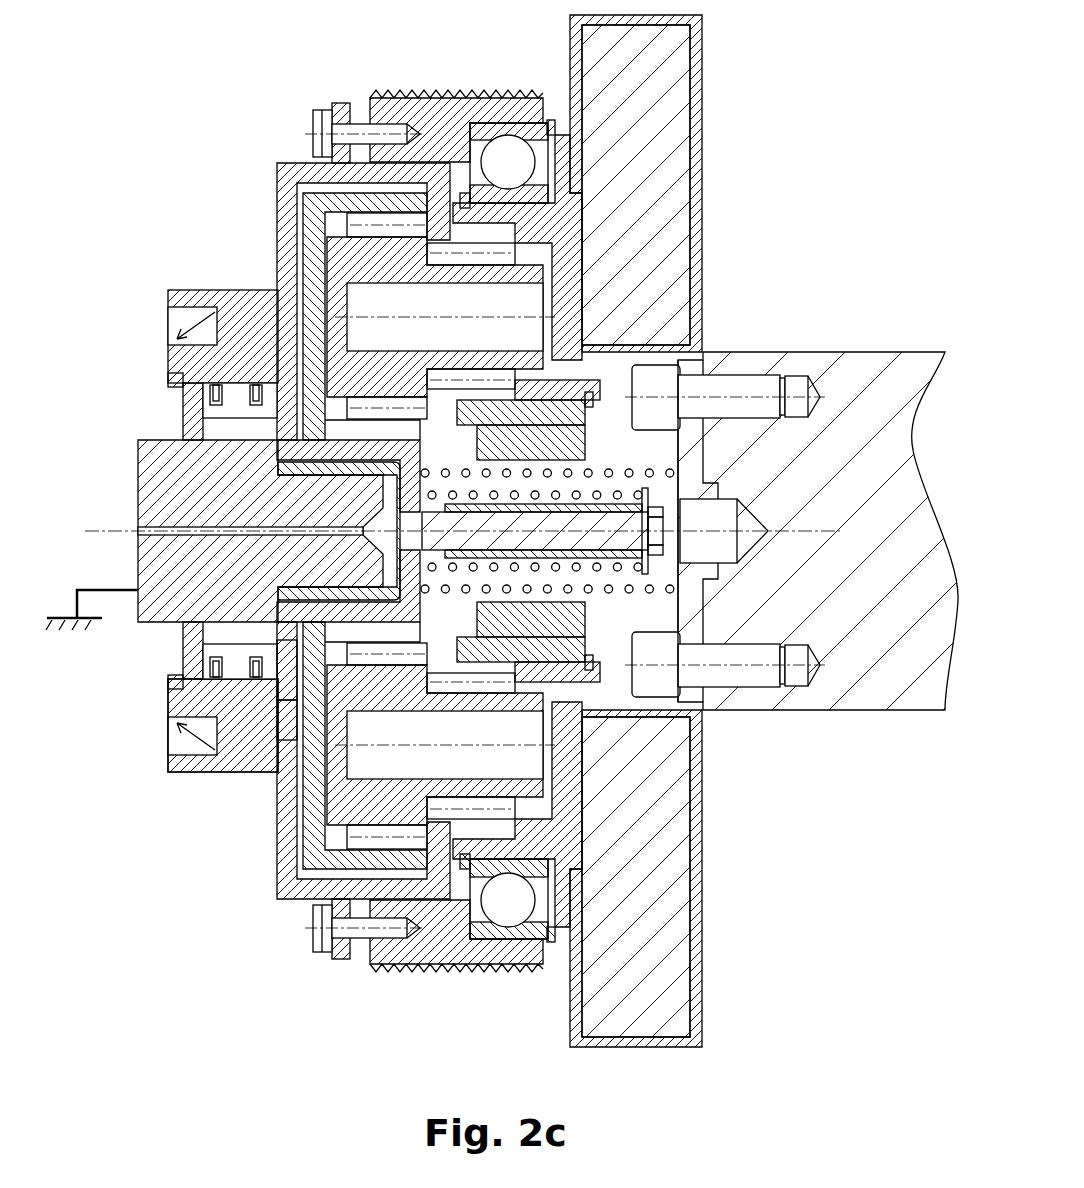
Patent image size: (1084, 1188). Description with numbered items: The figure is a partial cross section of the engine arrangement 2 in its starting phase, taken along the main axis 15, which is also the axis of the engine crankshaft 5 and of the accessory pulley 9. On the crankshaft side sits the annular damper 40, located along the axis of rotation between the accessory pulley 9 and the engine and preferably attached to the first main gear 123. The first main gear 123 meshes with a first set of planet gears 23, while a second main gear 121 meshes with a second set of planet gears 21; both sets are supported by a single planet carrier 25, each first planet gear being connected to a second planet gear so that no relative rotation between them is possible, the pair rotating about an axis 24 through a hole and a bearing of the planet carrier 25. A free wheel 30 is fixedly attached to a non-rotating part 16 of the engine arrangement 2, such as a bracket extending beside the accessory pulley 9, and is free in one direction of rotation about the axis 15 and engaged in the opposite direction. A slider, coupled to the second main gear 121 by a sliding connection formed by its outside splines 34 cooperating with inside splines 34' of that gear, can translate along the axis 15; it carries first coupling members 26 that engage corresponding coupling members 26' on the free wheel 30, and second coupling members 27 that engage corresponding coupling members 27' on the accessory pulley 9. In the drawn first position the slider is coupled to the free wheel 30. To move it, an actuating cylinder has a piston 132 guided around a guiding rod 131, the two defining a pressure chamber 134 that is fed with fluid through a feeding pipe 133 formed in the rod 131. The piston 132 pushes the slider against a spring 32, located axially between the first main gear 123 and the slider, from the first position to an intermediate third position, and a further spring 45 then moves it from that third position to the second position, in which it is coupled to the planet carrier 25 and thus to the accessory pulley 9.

The engine arrangement 2 is at (798, 137).
The crankshaft 5 is at (840, 352).
The accessory pulley 9 is at (427, 90).
The main axis 15 is at (105, 533).
The non-rotating part 16 is at (62, 630).
The second set of planet gears 21 is at (360, 237).
The first set of planet gears 23 is at (440, 260).
The axis 24 is at (378, 310).
The planet carrier 25 is at (437, 828).
The first coupling members 26 is at (324, 668).
The coupling members 26' is at (339, 696).
The second coupling members 27 is at (236, 744).
The coupling members 27' is at (287, 720).
The free wheel 30 is at (237, 398).
The spring 32 is at (632, 470).
The outside splines 34 is at (225, 500).
The inside splines 34' is at (223, 725).
The annular damper 40 is at (650, 85).
The spring 45 is at (618, 572).
The second main gear 121 is at (313, 232).
The first main gear 123 is at (562, 305).
The guiding rod 131 is at (370, 523).
The piston 132 is at (283, 590).
The feeding pipe 133 is at (167, 527).
The pressure chamber 134 is at (270, 513).